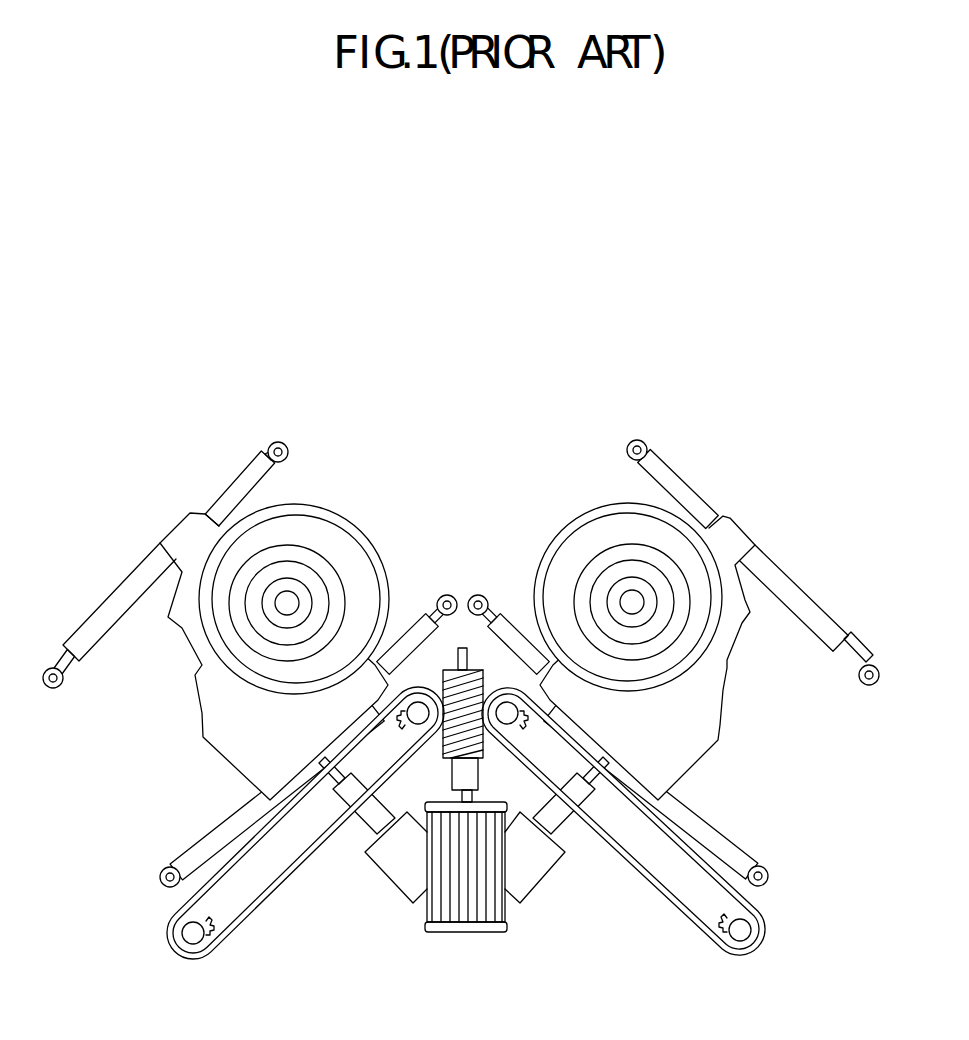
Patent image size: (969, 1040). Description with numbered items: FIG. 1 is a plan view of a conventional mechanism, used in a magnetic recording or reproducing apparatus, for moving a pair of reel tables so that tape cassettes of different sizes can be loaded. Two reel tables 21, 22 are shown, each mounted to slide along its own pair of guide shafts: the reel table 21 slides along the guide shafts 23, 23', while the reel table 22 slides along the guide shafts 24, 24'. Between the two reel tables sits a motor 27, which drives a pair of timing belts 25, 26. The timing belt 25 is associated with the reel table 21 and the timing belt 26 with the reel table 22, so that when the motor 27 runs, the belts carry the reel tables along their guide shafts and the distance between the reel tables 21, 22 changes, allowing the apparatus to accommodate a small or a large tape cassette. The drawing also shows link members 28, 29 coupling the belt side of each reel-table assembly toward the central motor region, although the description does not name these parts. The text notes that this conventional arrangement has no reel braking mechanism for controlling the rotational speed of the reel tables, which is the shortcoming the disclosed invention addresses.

The reel table 21 is at (210, 548).
The reel table 22 is at (591, 515).
The guide shaft 23 is at (96, 615).
The guide shaft 24 is at (809, 592).
The guide shaft 23' is at (257, 796).
The guide shaft 24' is at (684, 795).
The timing belt 25 is at (243, 915).
The timing belt 26 is at (690, 915).
The motor 27 is at (477, 910).
The left link rod 28 is at (367, 823).
The right link rod 29 is at (567, 833).